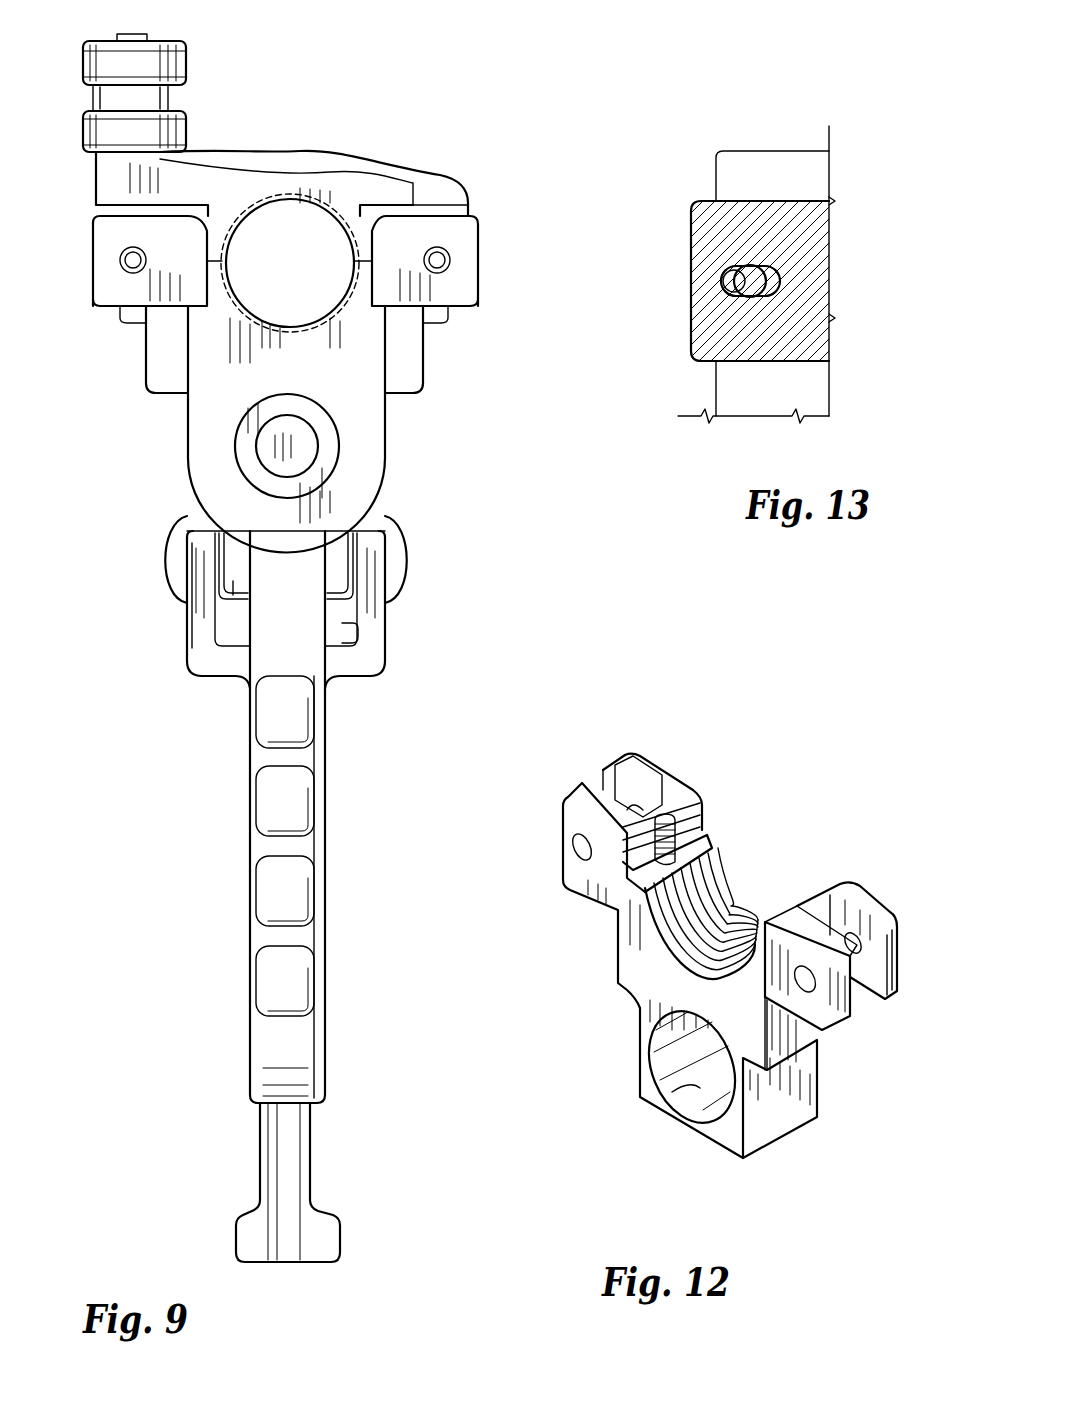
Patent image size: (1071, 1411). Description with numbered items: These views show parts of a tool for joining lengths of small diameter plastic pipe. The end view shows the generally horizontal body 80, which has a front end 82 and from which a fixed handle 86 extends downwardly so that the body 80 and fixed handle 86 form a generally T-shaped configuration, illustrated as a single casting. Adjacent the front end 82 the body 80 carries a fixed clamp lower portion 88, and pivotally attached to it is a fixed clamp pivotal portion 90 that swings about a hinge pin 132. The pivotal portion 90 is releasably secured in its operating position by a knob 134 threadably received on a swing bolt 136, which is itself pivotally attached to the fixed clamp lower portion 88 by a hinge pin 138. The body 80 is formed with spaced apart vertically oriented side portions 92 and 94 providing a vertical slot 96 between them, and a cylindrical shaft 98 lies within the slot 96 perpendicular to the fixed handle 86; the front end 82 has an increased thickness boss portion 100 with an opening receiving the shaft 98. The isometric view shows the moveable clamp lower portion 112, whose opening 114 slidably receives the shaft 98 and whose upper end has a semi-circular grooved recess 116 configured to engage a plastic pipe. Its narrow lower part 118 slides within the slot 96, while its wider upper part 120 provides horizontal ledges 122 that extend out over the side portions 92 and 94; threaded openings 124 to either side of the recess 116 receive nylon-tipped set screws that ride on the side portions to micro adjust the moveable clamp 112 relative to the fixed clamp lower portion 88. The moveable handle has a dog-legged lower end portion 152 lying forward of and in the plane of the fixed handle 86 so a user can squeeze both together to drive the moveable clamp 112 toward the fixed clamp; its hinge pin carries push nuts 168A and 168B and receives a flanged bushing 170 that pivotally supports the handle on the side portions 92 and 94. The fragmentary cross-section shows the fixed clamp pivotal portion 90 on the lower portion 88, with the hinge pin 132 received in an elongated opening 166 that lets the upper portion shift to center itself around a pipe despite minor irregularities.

In FIG. 9, the body 80 is at (191, 455).
In FIG. 9, the front end 82 is at (239, 380).
In FIG. 9, the fixed handle 86 is at (262, 1165).
In FIG. 9, the fixed clamp lower portion 88 is at (209, 310).
In FIG. 13, the fixed clamp lower portion 88 is at (764, 165).
In FIG. 9, the fixed clamp pivotal portion 90 is at (302, 148).
In FIG. 13, the fixed clamp pivotal portion 90 is at (710, 228).
In FIG. 9, the side portion 92 is at (376, 618).
In FIG. 9, the side portion 94 is at (199, 608).
In FIG. 9, the vertical slot 96 is at (352, 635).
In FIG. 9, the cylindrical shaft 98 is at (299, 440).
In FIG. 9, the boss portion 100 is at (339, 420).
In FIG. 12, the moveable clamp lower portion 112 is at (810, 1140).
In FIG. 12, the opening 114 is at (694, 1092).
In FIG. 12, the semi-circular grooved recess 116 is at (719, 905).
In FIG. 12, the lower part 118 is at (658, 1076).
In FIG. 12, the upper part 120 is at (640, 945).
In FIG. 12, the horizontal ledges 122 is at (629, 1010).
In FIG. 12, the threaded openings 124 is at (699, 820).
In FIG. 13, the hinge pin 132 is at (740, 277).
In FIG. 9, the knob 134 is at (182, 50).
In FIG. 9, the swing bolt 136 is at (134, 210).
In FIG. 9, the hinge pin 138 is at (120, 257).
In FIG. 9, the lower end portion 152 is at (314, 840).
In FIG. 13, the elongated opening 166 is at (715, 282).
In FIG. 9, the push nut 168A is at (404, 570).
In FIG. 9, the push nut 168B is at (179, 565).
In FIG. 9, the flanged bushing 170 is at (239, 580).